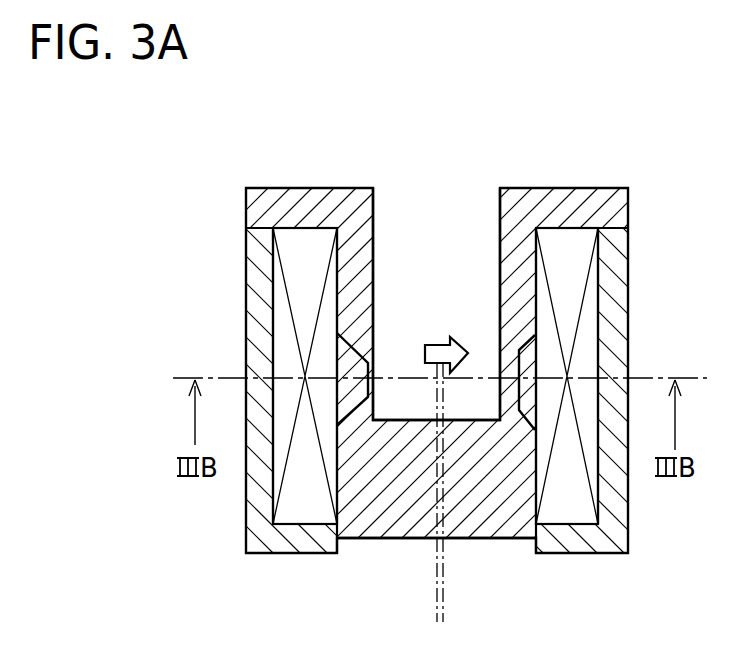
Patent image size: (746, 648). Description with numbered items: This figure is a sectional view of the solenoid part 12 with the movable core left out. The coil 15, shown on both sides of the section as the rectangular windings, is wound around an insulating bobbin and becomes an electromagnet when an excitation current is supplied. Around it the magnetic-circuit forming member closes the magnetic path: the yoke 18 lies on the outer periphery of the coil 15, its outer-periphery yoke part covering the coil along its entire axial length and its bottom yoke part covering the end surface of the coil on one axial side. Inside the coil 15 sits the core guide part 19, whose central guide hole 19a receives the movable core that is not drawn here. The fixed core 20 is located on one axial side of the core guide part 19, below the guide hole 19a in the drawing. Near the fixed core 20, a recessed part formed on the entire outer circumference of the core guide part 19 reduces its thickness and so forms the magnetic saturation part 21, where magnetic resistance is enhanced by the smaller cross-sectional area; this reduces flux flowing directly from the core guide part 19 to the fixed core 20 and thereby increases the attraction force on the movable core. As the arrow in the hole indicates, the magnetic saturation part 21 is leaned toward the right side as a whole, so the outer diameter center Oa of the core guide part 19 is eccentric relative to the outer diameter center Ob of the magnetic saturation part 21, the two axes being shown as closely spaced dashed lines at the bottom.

The solenoid part 12 is at (565, 176).
The yoke 18 is at (257, 283).
The core guide part 19 is at (523, 280).
The guide hole 19a is at (462, 253).
The coil 15 is at (567, 318).
The magnetic saturation part 21 is at (508, 372).
The fixed core 20 is at (475, 493).
The outer diameter center of the core guide part Oa is at (434, 602).
The outer diameter center of the magnetic saturation part Ob is at (446, 595).